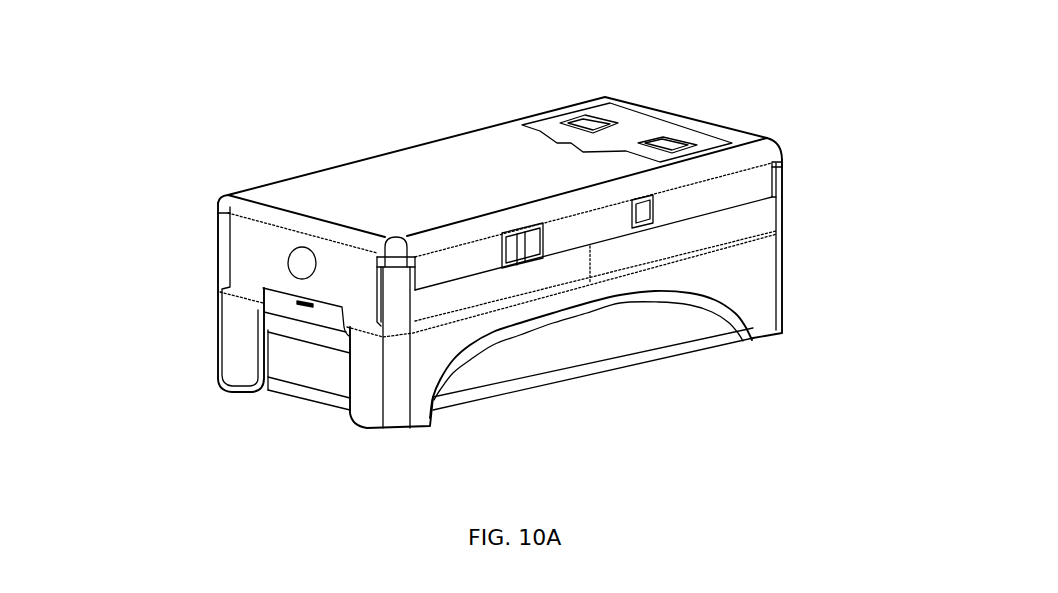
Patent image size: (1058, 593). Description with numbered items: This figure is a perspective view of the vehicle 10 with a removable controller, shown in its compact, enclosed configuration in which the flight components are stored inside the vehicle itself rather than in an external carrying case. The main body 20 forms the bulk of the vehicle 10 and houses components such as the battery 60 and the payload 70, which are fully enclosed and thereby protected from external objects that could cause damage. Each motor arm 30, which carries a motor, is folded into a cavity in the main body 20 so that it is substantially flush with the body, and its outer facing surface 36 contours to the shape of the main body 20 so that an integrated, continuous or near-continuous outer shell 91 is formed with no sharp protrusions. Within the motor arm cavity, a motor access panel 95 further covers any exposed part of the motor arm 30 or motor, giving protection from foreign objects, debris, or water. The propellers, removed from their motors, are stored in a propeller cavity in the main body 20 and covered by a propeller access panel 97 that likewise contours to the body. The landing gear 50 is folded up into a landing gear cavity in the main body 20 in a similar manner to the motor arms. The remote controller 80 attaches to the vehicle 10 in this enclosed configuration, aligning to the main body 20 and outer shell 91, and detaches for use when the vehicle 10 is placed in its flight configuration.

The vehicle 10 is at (148, 50).
The main body 20 is at (368, 179).
The motor arm 30 is at (483, 293).
The outer facing surface 36 is at (725, 224).
The landing gear 50 is at (750, 296).
The battery 60 is at (633, 135).
The payload 70 is at (306, 263).
The remote controller 80 is at (660, 323).
The outer shell 91 is at (735, 182).
The motor access panel 95 is at (596, 230).
The propeller access panel 97 is at (285, 296).